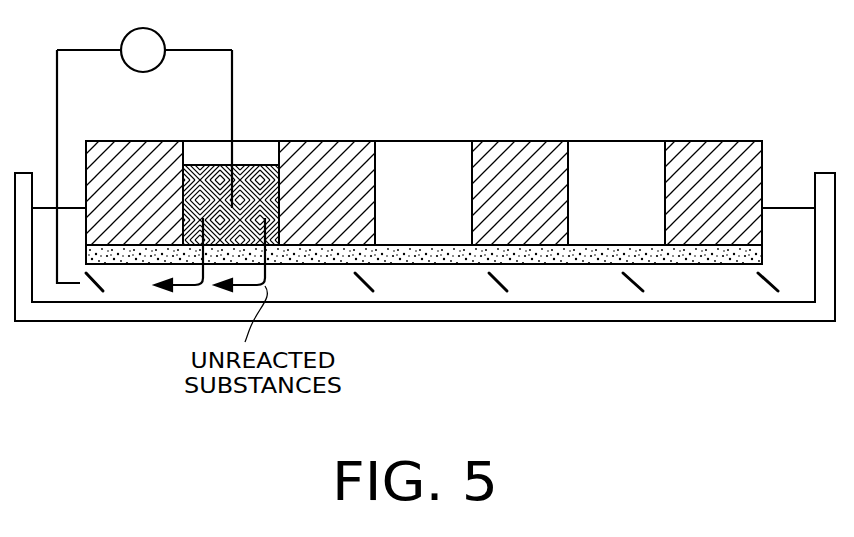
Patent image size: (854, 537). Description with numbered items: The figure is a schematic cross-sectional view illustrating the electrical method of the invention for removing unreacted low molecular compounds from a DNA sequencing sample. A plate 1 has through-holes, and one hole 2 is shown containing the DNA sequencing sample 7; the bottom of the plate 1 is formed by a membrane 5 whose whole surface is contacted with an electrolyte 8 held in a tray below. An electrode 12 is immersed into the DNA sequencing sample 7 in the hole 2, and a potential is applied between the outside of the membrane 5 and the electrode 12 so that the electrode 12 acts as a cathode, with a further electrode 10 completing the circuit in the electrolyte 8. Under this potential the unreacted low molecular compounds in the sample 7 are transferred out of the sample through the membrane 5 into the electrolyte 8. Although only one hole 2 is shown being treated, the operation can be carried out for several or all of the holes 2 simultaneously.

The plate 1 is at (736, 114).
The hole 2 is at (265, 148).
The membrane 5 is at (678, 264).
The DNA sequencing sample 7 is at (203, 172).
The electrolyte 8 is at (440, 283).
The electrode 10 is at (78, 285).
The electrode 12 is at (233, 67).